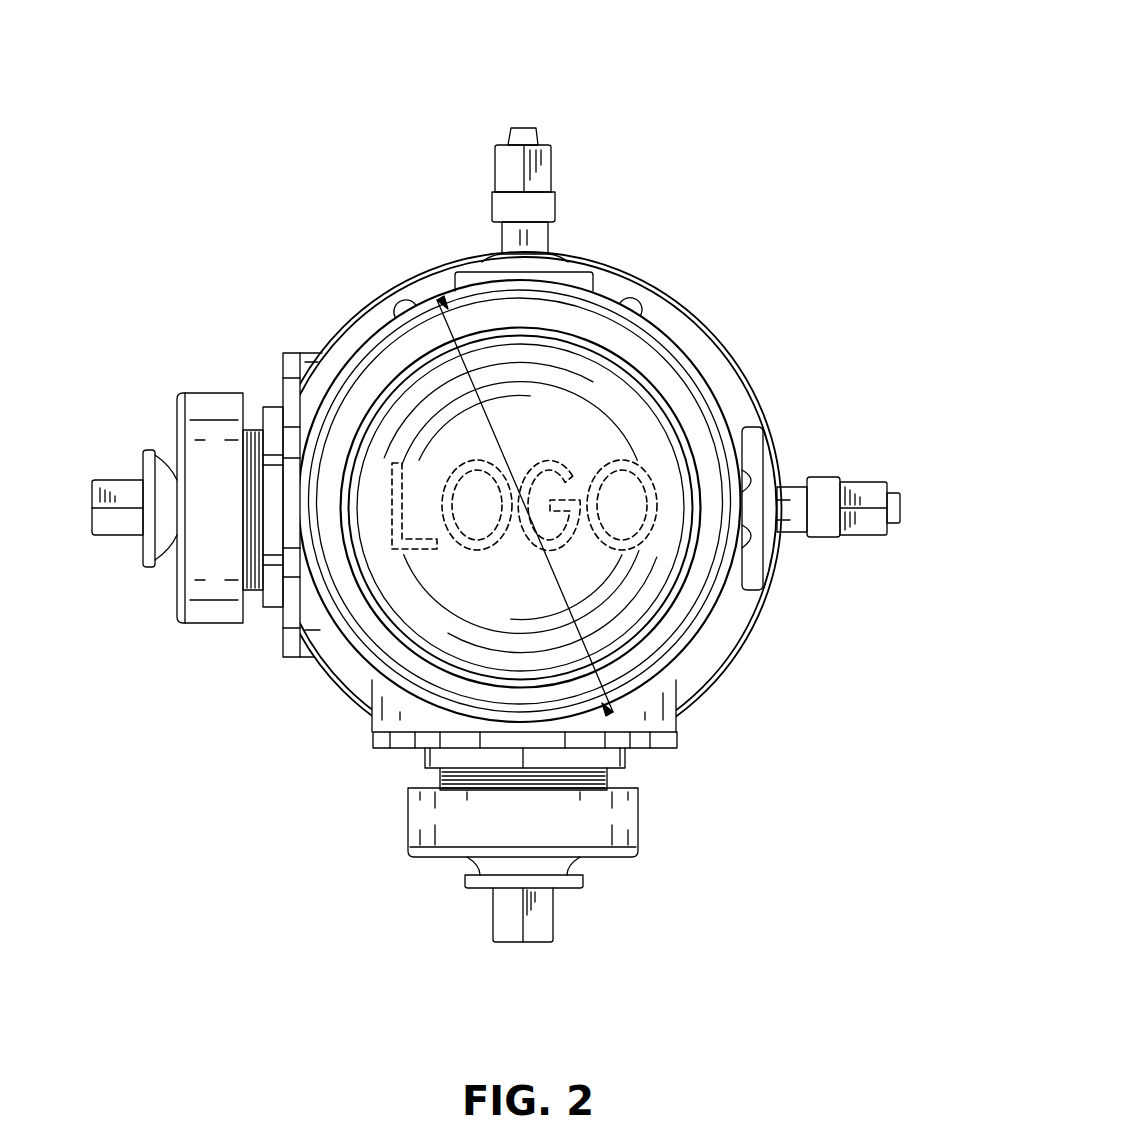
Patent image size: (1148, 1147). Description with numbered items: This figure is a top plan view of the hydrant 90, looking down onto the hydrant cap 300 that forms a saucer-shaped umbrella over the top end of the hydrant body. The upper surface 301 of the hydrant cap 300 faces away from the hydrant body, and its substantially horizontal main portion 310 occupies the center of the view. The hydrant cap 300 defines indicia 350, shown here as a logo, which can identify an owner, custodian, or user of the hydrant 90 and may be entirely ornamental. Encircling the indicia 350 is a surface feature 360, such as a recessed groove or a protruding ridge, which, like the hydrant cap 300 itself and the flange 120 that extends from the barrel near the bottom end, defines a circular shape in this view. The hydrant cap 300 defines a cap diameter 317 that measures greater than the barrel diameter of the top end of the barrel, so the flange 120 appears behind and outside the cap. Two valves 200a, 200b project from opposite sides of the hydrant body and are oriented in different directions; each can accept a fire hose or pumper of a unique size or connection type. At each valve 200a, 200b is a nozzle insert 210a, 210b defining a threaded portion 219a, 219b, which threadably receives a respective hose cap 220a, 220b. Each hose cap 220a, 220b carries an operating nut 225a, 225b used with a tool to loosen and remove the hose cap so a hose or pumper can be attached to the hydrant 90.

The hydrant 90 is at (716, 105).
The flange 120 is at (462, 263).
The hydrant cap 300 is at (692, 399).
The upper surface 301 is at (662, 608).
The main portion 310 is at (423, 688).
The cap diameter 317 is at (437, 386).
The indicia 350 is at (556, 462).
The surface feature 360 is at (712, 593).
The valve 200a is at (200, 598).
The valve 200b is at (633, 823).
The nozzle insert 210a is at (285, 645).
The nozzle insert 210b is at (665, 751).
The threaded portion 219a is at (262, 430).
The threaded portion 219b is at (615, 777).
The hose cap 220a is at (218, 420).
The hose cap 220b is at (440, 834).
The operating nut 225a is at (115, 523).
The operating nut 225b is at (548, 913).